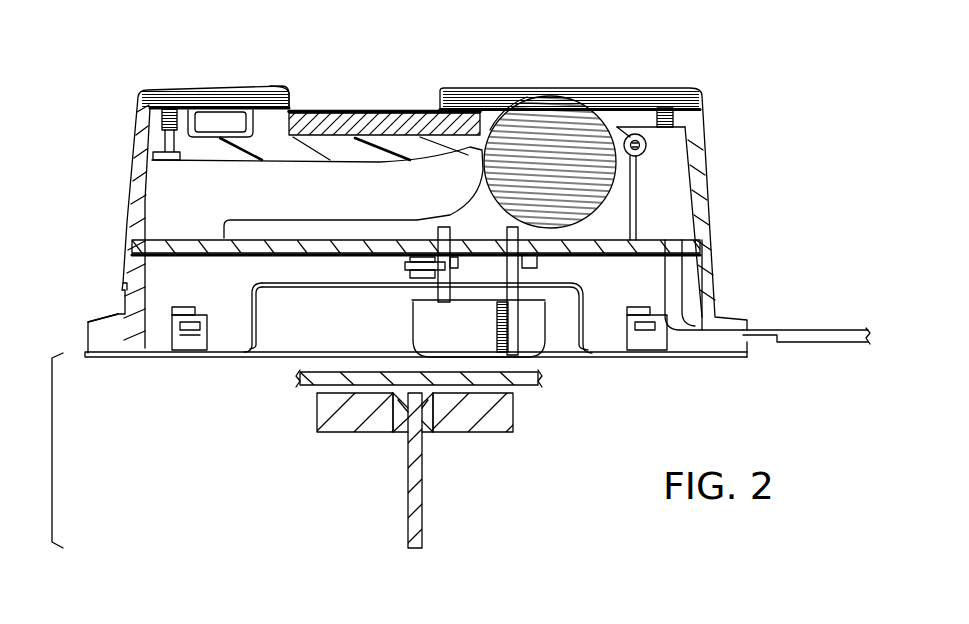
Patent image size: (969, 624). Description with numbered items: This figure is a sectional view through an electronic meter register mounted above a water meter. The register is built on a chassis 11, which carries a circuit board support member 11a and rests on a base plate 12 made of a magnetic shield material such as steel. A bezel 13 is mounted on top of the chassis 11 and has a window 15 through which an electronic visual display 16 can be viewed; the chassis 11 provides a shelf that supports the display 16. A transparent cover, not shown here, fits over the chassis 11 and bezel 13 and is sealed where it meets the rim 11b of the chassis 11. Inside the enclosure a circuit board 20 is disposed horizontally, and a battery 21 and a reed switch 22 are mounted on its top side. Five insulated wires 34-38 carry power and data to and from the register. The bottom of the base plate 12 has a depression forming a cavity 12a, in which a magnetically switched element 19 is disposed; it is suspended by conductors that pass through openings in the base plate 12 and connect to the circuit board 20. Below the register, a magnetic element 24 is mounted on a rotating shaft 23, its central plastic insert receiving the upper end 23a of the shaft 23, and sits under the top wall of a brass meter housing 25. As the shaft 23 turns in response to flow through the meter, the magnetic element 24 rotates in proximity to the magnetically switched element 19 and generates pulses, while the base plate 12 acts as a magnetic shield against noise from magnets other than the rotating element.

The chassis 11 is at (132, 173).
The circuit board support member 11a is at (123, 310).
The rim 11b is at (90, 347).
The base plate 12 is at (208, 355).
The cavity 12a is at (288, 336).
The bezel 13 is at (234, 80).
The window 15 is at (288, 102).
The electronic visual display 16 is at (387, 95).
The second magnetically switched element 19 is at (531, 358).
The circuit board 20 is at (680, 233).
The battery 21 is at (560, 110).
The reed switch 22 is at (641, 136).
The rotating shaft 23 is at (414, 507).
The shaft head 23a is at (400, 433).
The magnetic element 24 is at (499, 421).
The brass meter housing 25 is at (529, 388).
The insulated wires 34-38 is at (765, 318).